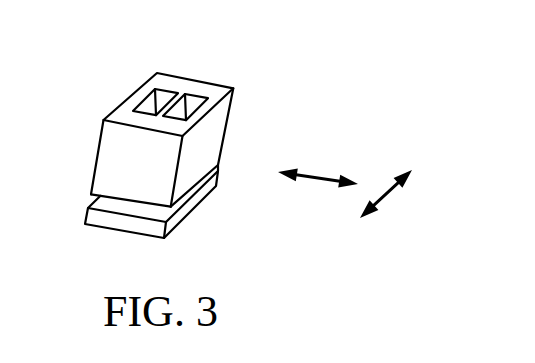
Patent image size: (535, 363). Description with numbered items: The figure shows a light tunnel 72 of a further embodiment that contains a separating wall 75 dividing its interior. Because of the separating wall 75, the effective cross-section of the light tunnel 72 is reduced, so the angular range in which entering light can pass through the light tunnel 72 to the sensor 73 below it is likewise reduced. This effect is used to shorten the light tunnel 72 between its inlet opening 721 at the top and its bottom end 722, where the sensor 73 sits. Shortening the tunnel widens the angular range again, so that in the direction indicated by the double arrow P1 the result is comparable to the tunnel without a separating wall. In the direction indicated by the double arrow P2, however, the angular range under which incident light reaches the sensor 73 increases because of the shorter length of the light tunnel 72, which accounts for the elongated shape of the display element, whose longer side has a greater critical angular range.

The light tunnel 72 is at (148, 128).
The inlet opening 721 is at (150, 102).
The bottom end 722 is at (91, 195).
The sensor 73 is at (183, 213).
The separating wall 75 is at (198, 95).
The double arrow P1 is at (325, 178).
The double arrow P2 is at (388, 193).